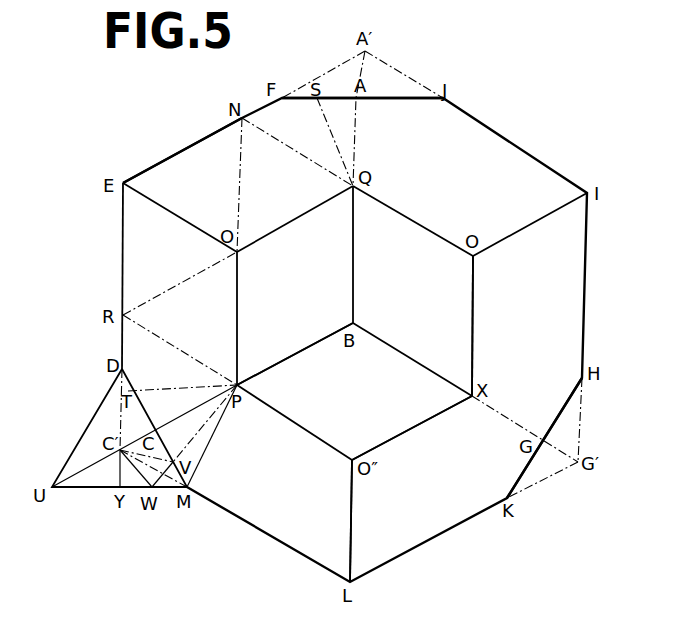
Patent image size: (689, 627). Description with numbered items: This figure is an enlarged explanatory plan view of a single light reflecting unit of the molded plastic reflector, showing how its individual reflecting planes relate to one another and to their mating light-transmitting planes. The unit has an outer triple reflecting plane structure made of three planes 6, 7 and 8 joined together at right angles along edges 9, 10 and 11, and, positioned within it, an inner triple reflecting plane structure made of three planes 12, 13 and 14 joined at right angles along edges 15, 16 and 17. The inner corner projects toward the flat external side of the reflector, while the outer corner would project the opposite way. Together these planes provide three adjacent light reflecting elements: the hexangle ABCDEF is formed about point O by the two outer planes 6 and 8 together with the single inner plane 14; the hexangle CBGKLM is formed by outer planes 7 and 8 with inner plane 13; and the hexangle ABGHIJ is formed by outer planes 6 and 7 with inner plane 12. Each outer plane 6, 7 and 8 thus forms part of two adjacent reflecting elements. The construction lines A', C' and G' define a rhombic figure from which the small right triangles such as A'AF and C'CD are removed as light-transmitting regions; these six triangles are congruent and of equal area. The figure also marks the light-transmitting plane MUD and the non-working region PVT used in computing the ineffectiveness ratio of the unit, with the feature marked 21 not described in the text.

The plane 6 is at (388, 117).
The plane 7 is at (540, 410).
The plane 8 is at (165, 308).
The edge 9 is at (557, 212).
The edge 10 is at (352, 547).
The edge 11 is at (167, 207).
The plane 12 is at (455, 302).
The plane 13 is at (387, 427).
The plane 14 is at (247, 313).
The edge 15 is at (430, 370).
The edge 16 is at (308, 347).
The edge 17 is at (355, 230).
The edge PO'' 21 is at (303, 428).